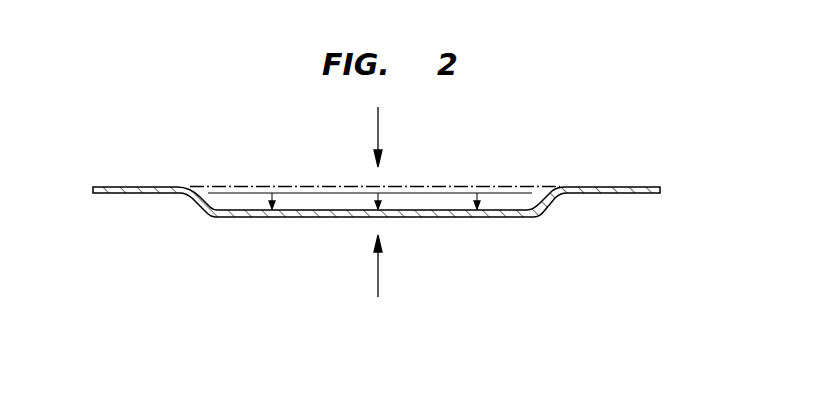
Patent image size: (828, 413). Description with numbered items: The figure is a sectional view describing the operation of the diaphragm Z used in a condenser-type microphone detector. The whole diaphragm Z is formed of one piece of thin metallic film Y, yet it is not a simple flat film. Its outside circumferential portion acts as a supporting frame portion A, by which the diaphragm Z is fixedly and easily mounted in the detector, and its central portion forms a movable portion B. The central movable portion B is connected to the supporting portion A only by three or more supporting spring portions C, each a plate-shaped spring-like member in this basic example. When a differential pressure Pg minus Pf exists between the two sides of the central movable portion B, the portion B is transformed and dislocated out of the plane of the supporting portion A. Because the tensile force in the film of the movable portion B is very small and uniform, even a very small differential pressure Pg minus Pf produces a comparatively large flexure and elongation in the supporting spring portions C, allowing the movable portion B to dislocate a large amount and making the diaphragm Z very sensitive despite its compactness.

The supporting frame portion A is at (620, 193).
The thin metallic film Y is at (622, 186).
The diaphragm Z is at (217, 174).
The central movable portion B is at (291, 188).
The supporting spring portions C is at (191, 199).
The gas-side pressure Pg is at (407, 137).
The opposite-side pressure Pf is at (404, 266).